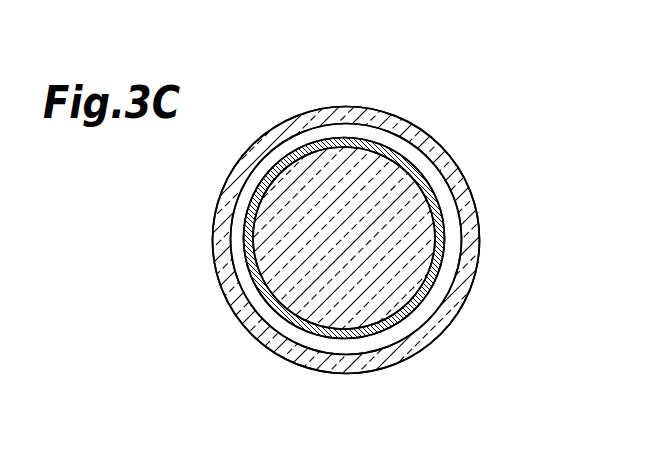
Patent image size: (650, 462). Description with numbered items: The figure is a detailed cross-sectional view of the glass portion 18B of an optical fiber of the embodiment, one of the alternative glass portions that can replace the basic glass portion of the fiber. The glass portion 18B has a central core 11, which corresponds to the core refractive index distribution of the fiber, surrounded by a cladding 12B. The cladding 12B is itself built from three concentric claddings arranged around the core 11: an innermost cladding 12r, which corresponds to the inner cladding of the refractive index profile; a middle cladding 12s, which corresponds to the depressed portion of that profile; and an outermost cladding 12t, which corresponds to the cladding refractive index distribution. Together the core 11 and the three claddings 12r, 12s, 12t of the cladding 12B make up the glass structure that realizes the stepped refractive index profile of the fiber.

The glass portion 18B is at (436, 100).
The core 11 is at (420, 213).
The cladding 12B is at (140, 253).
The cladding 12r is at (243, 237).
The cladding 12s is at (250, 292).
The cladding 12t is at (253, 327).